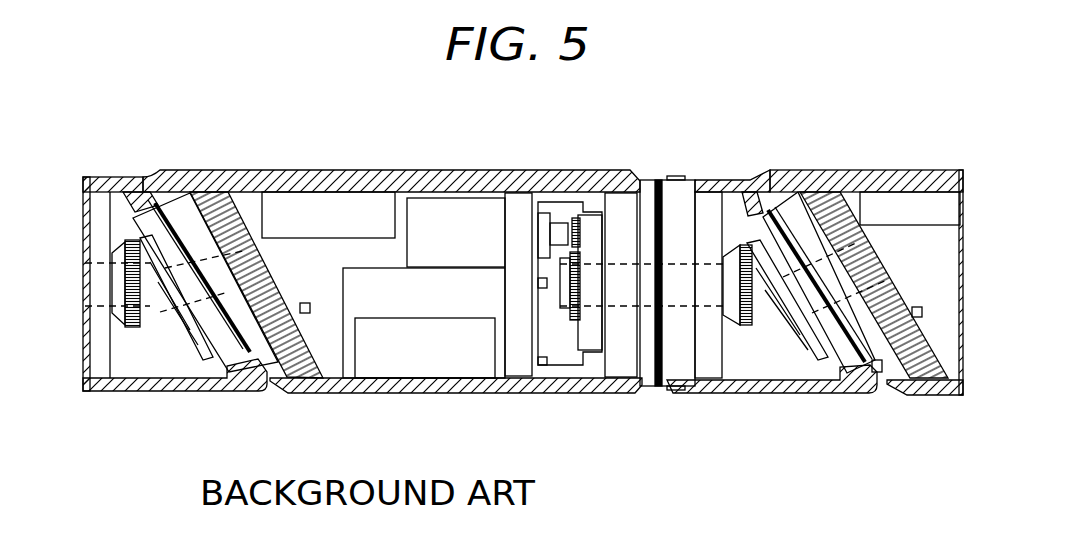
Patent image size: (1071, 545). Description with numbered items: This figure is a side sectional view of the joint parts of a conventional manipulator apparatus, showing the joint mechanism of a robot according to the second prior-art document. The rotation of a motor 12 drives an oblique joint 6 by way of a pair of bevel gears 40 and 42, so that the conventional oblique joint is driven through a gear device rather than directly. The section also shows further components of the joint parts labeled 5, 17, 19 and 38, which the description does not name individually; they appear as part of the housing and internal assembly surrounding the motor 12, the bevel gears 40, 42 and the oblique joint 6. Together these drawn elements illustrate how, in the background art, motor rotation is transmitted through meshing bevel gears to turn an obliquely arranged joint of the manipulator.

The ring 5 is at (677, 205).
The oblique joint 6 is at (753, 180).
The motor 12 is at (370, 280).
The motor 17 is at (563, 210).
The battery 19 is at (437, 210).
The lens drive unit 38 is at (570, 277).
The bevel gear 40 is at (745, 325).
The bevel gear 42 is at (855, 368).